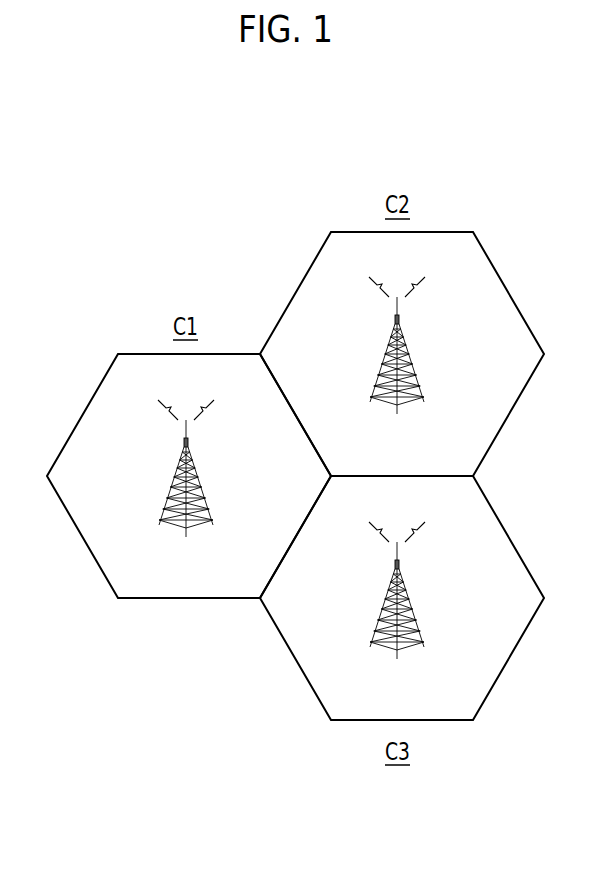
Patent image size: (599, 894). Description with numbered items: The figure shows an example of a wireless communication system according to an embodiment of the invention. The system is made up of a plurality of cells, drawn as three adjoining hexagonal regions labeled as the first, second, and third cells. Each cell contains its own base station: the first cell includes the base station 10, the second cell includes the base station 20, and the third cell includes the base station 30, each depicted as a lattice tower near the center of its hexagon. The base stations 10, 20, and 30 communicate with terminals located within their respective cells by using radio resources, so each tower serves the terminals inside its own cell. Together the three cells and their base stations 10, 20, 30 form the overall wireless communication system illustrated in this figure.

The base station 10 is at (208, 503).
The base station 20 is at (419, 381).
The base station 30 is at (419, 626).